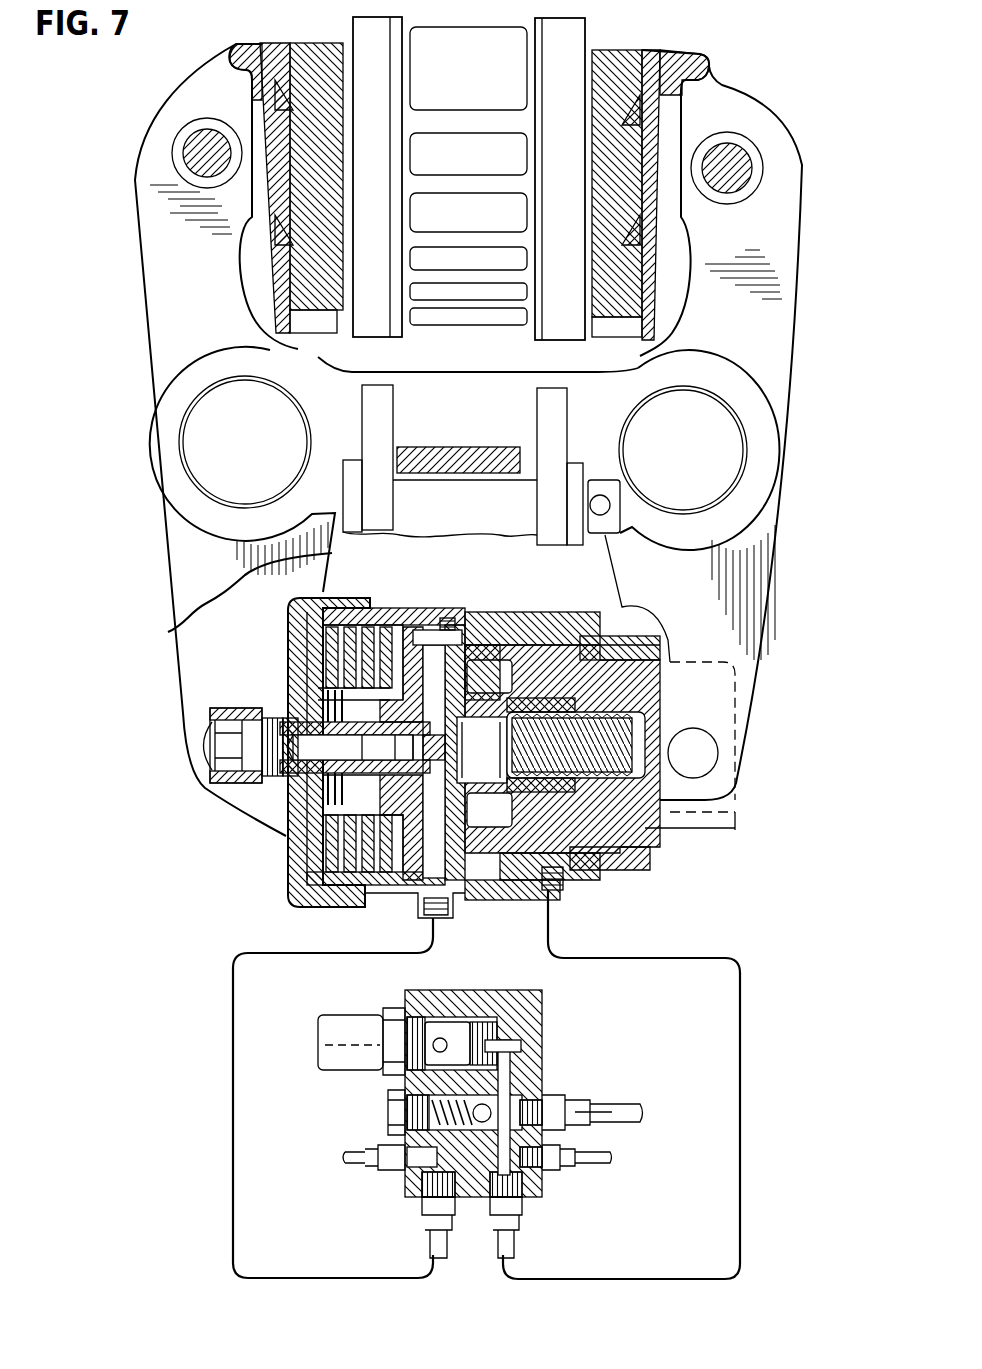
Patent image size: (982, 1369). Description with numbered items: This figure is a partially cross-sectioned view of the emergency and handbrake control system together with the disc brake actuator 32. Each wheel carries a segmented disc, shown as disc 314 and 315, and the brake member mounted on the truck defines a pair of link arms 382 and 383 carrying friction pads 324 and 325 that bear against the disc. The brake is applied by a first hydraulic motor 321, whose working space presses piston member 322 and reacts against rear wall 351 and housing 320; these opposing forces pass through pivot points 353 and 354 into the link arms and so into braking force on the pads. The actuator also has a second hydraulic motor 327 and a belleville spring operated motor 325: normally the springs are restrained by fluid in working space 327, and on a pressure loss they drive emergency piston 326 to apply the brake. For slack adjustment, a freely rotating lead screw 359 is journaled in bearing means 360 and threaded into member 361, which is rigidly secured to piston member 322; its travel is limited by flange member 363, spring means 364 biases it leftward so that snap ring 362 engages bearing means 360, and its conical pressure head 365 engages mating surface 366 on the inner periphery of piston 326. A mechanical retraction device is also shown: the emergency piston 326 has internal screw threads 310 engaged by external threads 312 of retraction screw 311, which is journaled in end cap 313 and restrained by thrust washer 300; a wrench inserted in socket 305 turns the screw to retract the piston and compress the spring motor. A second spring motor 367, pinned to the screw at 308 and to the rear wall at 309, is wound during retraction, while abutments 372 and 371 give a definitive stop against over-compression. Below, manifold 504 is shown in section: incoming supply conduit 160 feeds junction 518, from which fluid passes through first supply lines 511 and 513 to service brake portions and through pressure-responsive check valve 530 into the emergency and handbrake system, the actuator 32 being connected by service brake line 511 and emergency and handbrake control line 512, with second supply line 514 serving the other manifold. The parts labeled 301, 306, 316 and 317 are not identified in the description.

The disc brake actuator 32 is at (752, 841).
The incoming supply conduit 160 is at (617, 1112).
The thrust washer 300 is at (305, 716).
The pressure relief valve 301 is at (335, 1038).
The socket 305 is at (210, 716).
The bearing 306 is at (340, 668).
The pin connection to retraction screw 308 is at (355, 747).
The pin connection to rear wall 309 is at (305, 747).
The internal screw threads 310 is at (401, 827).
The retraction screw 311 is at (348, 798).
The external threads 312 is at (408, 748).
The end cap 313 is at (313, 637).
The disc 314 is at (360, 35).
The disc 315 is at (578, 75).
The vent opening 316 is at (475, 118).
The vent opening 317 is at (470, 183).
The housing 320 is at (392, 897).
The first hydraulic motor 321 is at (503, 698).
The piston member 322 is at (599, 696).
The friction pad 324 is at (305, 55).
The friction pad / spring operated motor 325 is at (617, 70).
The emergency piston 326 is at (395, 672).
The second hydraulic motor 327 is at (431, 657).
The rear wall 351 is at (460, 645).
The pivot point 353 is at (230, 446).
The pivot point 354 is at (668, 454).
The lead screw 359 is at (625, 742).
The bearing means 360 is at (517, 813).
The threaded member 361 is at (540, 710).
The snap ring 362 is at (576, 745).
The flange member 363 is at (477, 750).
The spring means 364 is at (489, 813).
The conical pressure head 365 is at (481, 750).
The mating surface 366 is at (489, 679).
The second spring motor 367 is at (328, 680).
The abutment 371 is at (377, 747).
The abutment 372 is at (417, 728).
The link arm 382 is at (150, 290).
The link arm 383 is at (768, 327).
The manifold 504 is at (543, 1035).
The service brake line 511 is at (607, 1279).
The emergency and handbrake control line 512 is at (236, 1173).
The first supply line 513 is at (597, 1158).
The second supply line 514 is at (355, 1156).
The junction 518 is at (508, 1110).
The pressure-responsive check valve 530 is at (388, 1115).